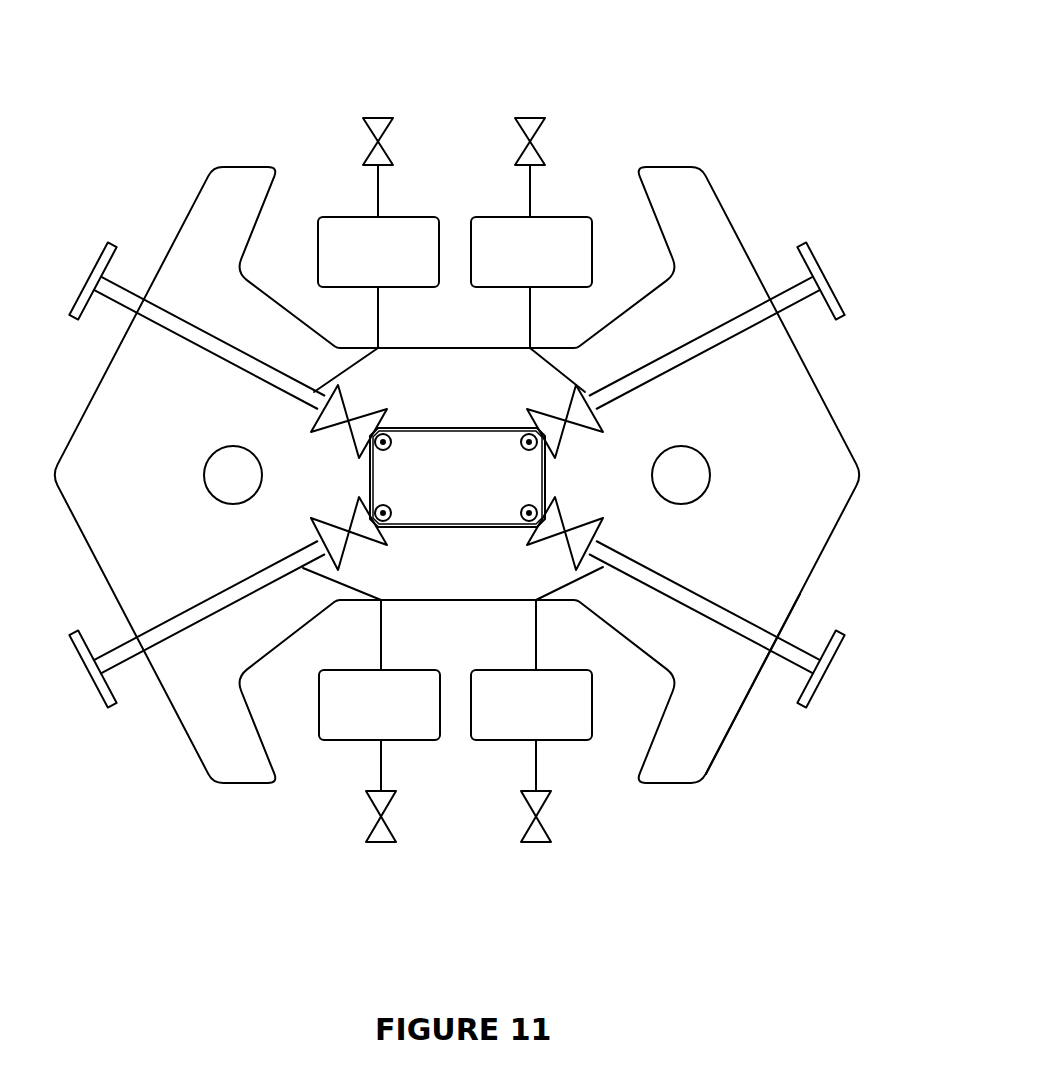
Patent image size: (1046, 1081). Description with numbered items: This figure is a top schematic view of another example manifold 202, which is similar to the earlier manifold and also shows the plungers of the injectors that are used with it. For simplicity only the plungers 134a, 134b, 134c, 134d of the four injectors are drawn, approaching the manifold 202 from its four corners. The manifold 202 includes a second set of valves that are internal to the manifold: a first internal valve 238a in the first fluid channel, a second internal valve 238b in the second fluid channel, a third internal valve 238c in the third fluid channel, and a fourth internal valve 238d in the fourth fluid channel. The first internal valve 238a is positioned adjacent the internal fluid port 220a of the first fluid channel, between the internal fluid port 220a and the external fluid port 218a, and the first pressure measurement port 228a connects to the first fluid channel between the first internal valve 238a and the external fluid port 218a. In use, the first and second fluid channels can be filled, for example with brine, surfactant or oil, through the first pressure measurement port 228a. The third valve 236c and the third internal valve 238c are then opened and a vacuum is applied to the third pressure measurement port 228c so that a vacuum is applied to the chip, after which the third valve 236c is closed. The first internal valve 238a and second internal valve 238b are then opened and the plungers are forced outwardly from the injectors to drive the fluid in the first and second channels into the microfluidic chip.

The manifold 202 is at (850, 416).
The plunger 134a is at (795, 660).
The plunger 134b is at (786, 285).
The plunger 134c is at (128, 285).
The plunger 134d is at (122, 670).
The first internal valve 238a is at (600, 523).
The second internal valve 238b is at (606, 432).
The third internal valve 238c is at (325, 430).
The fourth internal valve 238d is at (318, 523).
The first pressure measurement port 228a is at (538, 600).
The third pressure measurement port 228c is at (379, 348).
The internal fluid port 220a is at (528, 514).
The third valve 236c is at (390, 127).
The external fluid port 218a is at (765, 653).